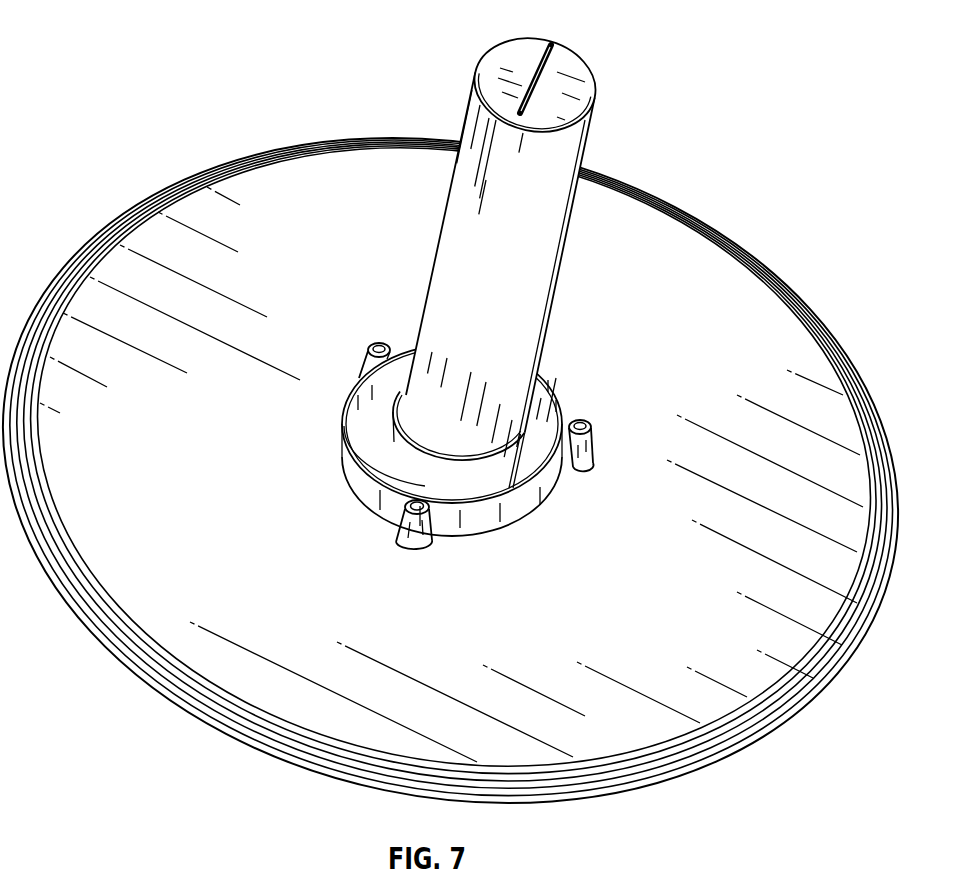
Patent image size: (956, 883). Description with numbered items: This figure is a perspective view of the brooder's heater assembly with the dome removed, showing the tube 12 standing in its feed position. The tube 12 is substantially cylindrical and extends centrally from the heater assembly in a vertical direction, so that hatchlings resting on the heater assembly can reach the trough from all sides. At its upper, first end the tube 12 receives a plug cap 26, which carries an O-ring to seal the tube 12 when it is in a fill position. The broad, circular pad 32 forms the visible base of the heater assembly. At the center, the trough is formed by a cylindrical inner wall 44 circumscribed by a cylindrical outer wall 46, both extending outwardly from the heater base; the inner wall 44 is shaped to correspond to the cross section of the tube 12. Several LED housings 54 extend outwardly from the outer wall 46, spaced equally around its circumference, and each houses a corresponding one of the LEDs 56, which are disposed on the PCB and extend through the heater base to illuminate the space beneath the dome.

The tube 12 is at (556, 203).
The plug cap 26 is at (498, 48).
The pad 32 is at (682, 278).
The inner wall 44 is at (400, 456).
The outer wall 46 is at (520, 518).
The LED housings 54 is at (362, 365).
The LEDs 56 is at (381, 344).